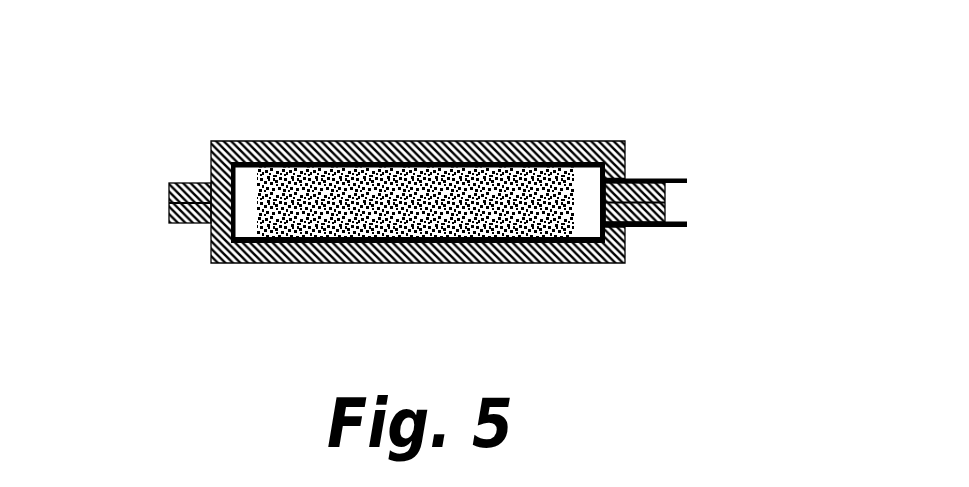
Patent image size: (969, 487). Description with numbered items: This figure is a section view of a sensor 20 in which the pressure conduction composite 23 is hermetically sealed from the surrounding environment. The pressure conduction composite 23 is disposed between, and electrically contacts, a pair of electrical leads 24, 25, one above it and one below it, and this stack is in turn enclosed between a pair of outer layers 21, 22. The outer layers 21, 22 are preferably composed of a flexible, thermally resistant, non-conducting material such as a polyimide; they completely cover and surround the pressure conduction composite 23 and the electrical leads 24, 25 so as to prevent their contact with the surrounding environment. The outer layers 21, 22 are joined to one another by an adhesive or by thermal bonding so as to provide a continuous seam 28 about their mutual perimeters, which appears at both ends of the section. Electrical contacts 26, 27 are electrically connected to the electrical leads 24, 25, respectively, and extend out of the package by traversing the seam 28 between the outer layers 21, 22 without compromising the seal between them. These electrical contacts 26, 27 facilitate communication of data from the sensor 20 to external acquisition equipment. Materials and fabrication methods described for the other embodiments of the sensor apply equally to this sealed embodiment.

The sensor 20 is at (634, 126).
The outer layer 21 is at (297, 140).
The outer layer 22 is at (340, 265).
The pressure conduction composite 23 is at (398, 187).
The electrical lead 24 is at (460, 163).
The electrical lead 25 is at (505, 243).
The electrical contact 26 is at (697, 182).
The electrical contact 27 is at (693, 228).
The seam 28 is at (168, 206).